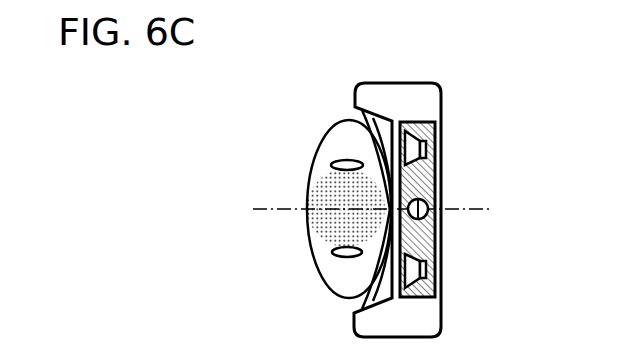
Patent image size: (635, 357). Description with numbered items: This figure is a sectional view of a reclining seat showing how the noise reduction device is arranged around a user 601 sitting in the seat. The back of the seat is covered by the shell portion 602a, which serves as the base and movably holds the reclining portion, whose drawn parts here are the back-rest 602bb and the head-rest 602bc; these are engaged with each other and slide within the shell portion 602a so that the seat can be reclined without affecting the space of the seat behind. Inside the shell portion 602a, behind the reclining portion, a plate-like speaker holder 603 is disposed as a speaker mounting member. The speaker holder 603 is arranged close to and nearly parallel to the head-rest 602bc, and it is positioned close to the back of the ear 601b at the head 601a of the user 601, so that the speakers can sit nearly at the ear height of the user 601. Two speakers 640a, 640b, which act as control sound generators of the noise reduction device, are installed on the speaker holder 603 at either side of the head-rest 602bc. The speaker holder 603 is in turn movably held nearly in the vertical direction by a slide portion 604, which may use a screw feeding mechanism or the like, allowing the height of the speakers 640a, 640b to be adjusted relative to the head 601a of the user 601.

The user 601 is at (335, 140).
The head 601a is at (320, 236).
The ear 601b is at (332, 162).
The shell portion 602a is at (433, 103).
The back-rest 602bb is at (362, 120).
The head-rest 602bc is at (390, 226).
The speaker holder 603 is at (422, 180).
The slide portion 604 is at (426, 216).
The speaker 640a is at (427, 278).
The speaker 640b is at (433, 142).